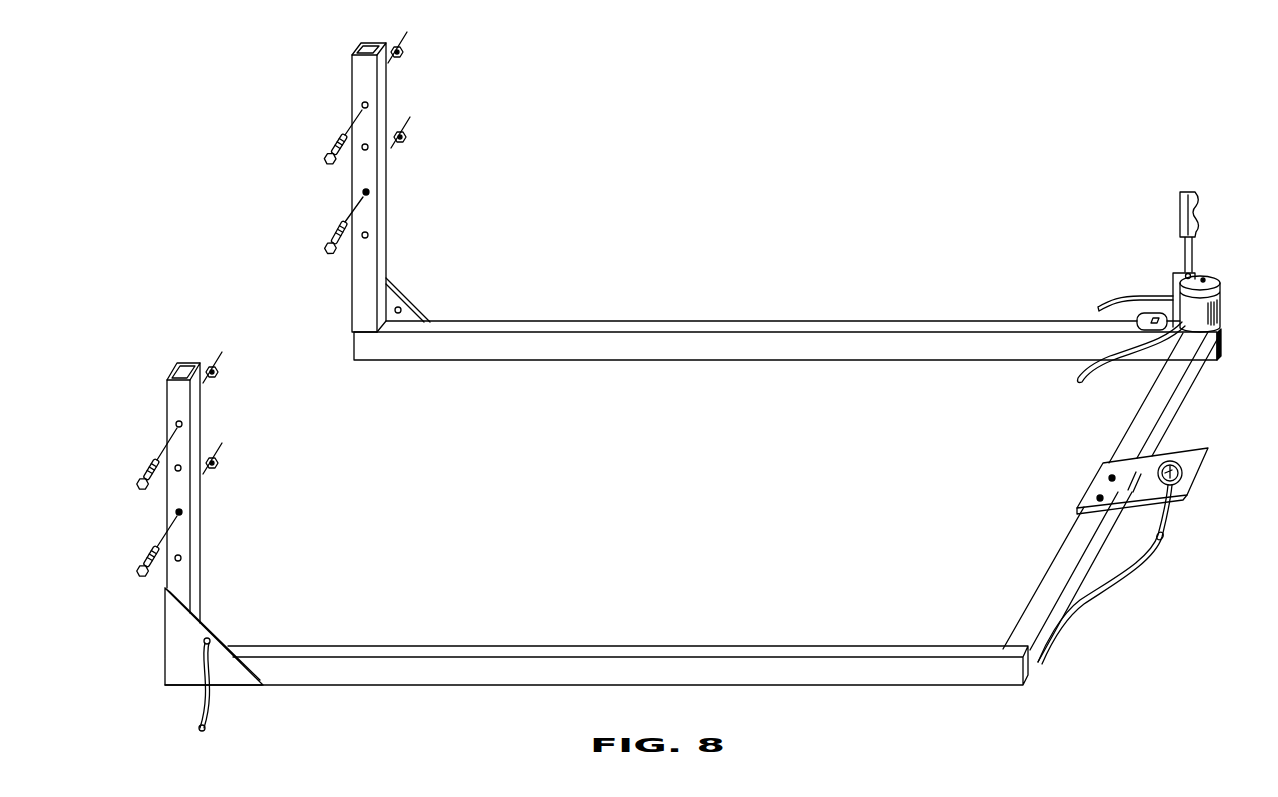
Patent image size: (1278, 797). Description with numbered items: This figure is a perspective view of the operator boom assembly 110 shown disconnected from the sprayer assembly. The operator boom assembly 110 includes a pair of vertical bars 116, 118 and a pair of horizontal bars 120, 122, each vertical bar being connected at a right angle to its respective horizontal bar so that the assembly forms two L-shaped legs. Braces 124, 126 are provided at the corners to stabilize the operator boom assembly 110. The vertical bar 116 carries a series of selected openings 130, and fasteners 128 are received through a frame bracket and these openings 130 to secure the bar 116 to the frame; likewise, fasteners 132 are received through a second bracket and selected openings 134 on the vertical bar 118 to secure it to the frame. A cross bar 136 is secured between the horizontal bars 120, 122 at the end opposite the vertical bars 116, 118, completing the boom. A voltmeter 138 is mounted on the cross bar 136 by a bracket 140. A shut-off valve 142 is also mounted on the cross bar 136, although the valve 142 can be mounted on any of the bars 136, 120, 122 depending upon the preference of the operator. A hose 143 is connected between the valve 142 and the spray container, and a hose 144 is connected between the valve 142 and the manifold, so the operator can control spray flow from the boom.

The operator boom assembly 110 is at (805, 279).
The vertical bar 116 is at (200, 531).
The vertical bar 118 is at (381, 240).
The horizontal bar 120 is at (402, 645).
The horizontal bar 122 is at (594, 327).
The brace 124 is at (171, 632).
The brace 126 is at (393, 297).
The fasteners 128 is at (155, 461).
The openings 130 is at (177, 472).
The fasteners 132 is at (336, 152).
The openings 134 is at (362, 150).
The cross bar 136 is at (1183, 381).
The voltmeter 138 is at (1180, 455).
The bracket 140 is at (1199, 468).
The shut-off valve 142 is at (1193, 271).
The hose 143 is at (1127, 298).
The hose 144 is at (1080, 378).